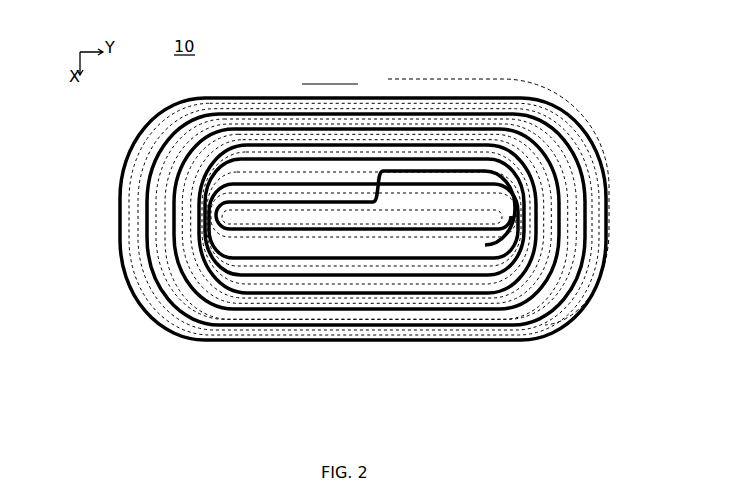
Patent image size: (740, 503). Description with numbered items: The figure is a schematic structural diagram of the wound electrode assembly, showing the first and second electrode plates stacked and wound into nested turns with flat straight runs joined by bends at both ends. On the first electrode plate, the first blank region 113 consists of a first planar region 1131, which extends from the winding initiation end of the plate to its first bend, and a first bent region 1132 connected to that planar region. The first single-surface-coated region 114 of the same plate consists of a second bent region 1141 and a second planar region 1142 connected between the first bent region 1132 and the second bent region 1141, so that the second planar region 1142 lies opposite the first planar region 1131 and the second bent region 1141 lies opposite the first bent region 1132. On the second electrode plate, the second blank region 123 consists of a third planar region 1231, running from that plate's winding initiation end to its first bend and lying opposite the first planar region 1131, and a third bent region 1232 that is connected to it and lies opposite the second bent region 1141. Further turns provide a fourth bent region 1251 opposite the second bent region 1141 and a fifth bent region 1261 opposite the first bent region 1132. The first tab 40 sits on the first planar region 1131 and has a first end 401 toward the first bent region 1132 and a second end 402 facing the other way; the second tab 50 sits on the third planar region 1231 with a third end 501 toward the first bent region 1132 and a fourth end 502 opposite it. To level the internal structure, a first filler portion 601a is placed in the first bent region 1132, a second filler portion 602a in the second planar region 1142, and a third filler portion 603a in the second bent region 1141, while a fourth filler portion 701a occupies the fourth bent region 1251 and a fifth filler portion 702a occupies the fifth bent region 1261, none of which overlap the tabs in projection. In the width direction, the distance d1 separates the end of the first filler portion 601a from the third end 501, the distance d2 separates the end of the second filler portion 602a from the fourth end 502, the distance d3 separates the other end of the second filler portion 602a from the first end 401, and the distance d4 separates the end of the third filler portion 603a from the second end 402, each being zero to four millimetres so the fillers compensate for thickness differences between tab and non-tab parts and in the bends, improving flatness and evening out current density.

The first tab 40 is at (381, 69).
The second tab 50 is at (296, 192).
The third end 501 is at (289, 190).
The fourth end 502 is at (320, 123).
The first end 401 is at (393, 148).
The second end 402 is at (438, 163).
The second blank region 123 is at (82, 99).
The third planar region 1231 is at (142, 118).
The third bent region 1232 is at (134, 136).
The fourth bent region 1251 is at (120, 293).
The fifth bent region 1261 is at (601, 249).
The first filler portion 601a is at (156, 218).
The fourth filler portion 701a is at (118, 265).
The third filler portion 603a is at (576, 113).
The fifth filler portion 702a is at (598, 158).
The second filler portion 602a is at (340, 226).
The first blank region 113 is at (232, 359).
The first planar region 1131 is at (239, 318).
The first bent region 1132 is at (172, 321).
The first single-surface-coated region 114 is at (576, 359).
The second bent region 1141 is at (538, 297).
The second planar region 1142 is at (463, 329).
The vertical distance d1 is at (285, 30).
The vertical distance d2 is at (306, 100).
The vertical distance d3 is at (405, 100).
The vertical distance d4 is at (461, 32).